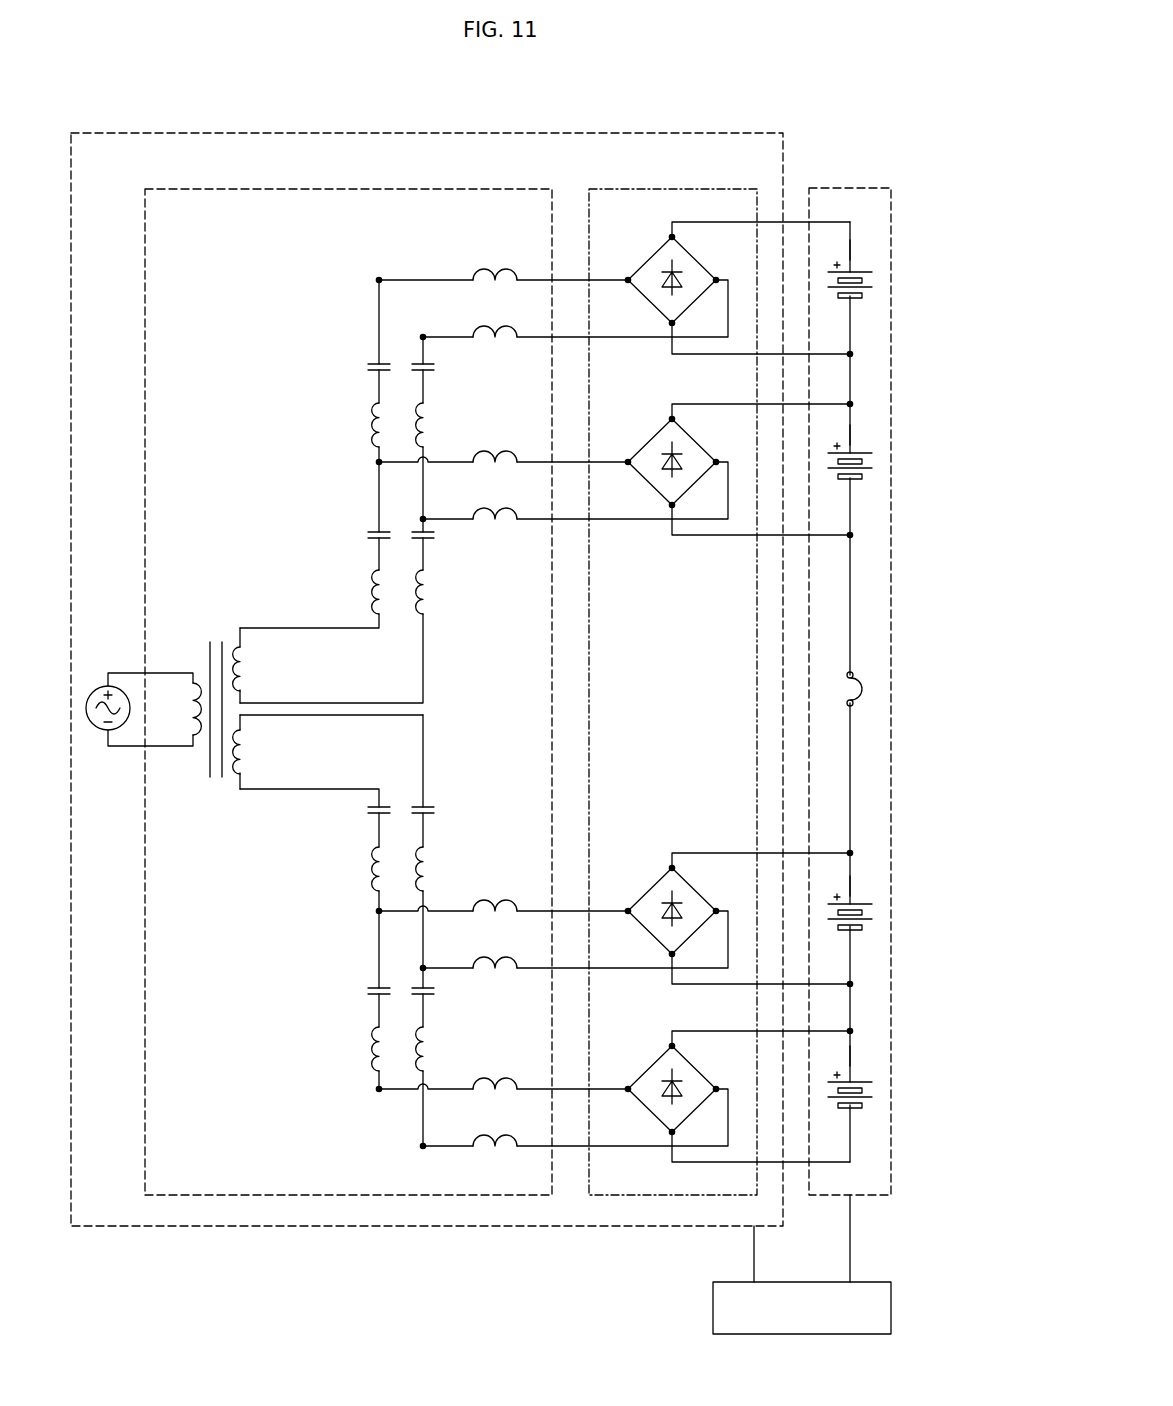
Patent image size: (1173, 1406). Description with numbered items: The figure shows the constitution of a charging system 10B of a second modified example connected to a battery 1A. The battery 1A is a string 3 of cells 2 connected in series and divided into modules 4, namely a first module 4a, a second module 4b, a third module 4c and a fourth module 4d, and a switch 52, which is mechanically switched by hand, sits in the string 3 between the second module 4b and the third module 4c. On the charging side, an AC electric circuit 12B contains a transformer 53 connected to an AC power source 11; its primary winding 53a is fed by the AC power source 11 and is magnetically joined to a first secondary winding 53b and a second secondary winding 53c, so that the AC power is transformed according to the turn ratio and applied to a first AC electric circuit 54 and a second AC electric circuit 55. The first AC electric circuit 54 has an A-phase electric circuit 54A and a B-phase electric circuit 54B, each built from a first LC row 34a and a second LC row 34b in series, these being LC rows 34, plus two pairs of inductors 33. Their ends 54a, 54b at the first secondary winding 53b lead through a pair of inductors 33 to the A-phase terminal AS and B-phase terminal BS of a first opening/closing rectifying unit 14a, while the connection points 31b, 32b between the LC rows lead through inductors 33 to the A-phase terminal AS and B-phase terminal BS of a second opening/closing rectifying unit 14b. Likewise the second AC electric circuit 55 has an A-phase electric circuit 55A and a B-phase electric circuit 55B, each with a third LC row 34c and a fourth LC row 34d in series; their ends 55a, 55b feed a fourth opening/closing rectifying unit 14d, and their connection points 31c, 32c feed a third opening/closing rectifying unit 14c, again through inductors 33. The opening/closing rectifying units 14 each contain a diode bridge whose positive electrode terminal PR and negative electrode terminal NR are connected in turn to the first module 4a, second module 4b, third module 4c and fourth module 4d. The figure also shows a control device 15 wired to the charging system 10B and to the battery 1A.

The charging system 10B is at (790, 129).
The AC electric circuit 12B is at (482, 186).
The battery 1A is at (862, 188).
The opening/closing rectifying unit 14 is at (614, 674).
The first opening/closing rectifying unit 14a is at (652, 257).
The second opening/closing rectifying unit 14b is at (653, 441).
The third opening/closing rectifying unit 14c is at (652, 889).
The fourth opening/closing rectifying unit 14d is at (653, 1069).
The A-phase terminal AS is at (624, 276).
The B-phase terminal BS is at (719, 274).
The positive electrode terminal PR is at (676, 235).
The negative electrode terminal NR is at (668, 324).
The inductor 33 is at (498, 328).
The first AC electric circuit 54 is at (360, 491).
The A-phase electric circuit 54A is at (374, 318).
The B-phase electric circuit 54B is at (428, 680).
The end of A-phase electric circuit 54a is at (376, 280).
The end of B-phase electric circuit 54b is at (425, 325).
The second AC electric circuit 55 is at (360, 931).
The A-phase electric circuit 55A is at (386, 785).
The B-phase electric circuit 55B is at (418, 1112).
The end of A-phase electric circuit 55a is at (376, 1089).
The end of B-phase electric circuit 55b is at (425, 1125).
The connection point 31b is at (376, 462).
The connection point 31c is at (376, 910).
The connection point 32b is at (426, 482).
The connection point 32c is at (426, 930).
The LC row 34 is at (311, 717).
The first LC row 34a is at (419, 400).
The second LC row 34b is at (419, 566).
The third LC row 34c is at (419, 846).
The fourth LC row 34d is at (419, 1026).
The transformer 53 is at (312, 556).
The primary winding 53a is at (193, 670).
The first secondary winding 53b is at (300, 626).
The second secondary winding 53c is at (268, 718).
The AC power source 11 is at (101, 738).
The string 3 is at (858, 608).
The switch 52 is at (866, 689).
The cell 2 is at (870, 288).
The module 4 is at (912, 645).
The first module 4a is at (855, 246).
The second module 4b is at (855, 433).
The third module 4c is at (855, 884).
The fourth module 4d is at (855, 1054).
The control device 15 is at (893, 1306).